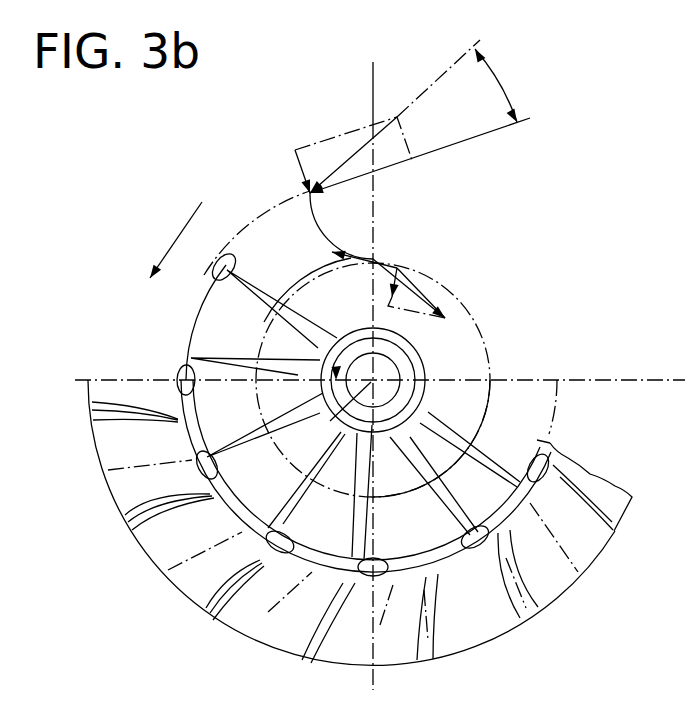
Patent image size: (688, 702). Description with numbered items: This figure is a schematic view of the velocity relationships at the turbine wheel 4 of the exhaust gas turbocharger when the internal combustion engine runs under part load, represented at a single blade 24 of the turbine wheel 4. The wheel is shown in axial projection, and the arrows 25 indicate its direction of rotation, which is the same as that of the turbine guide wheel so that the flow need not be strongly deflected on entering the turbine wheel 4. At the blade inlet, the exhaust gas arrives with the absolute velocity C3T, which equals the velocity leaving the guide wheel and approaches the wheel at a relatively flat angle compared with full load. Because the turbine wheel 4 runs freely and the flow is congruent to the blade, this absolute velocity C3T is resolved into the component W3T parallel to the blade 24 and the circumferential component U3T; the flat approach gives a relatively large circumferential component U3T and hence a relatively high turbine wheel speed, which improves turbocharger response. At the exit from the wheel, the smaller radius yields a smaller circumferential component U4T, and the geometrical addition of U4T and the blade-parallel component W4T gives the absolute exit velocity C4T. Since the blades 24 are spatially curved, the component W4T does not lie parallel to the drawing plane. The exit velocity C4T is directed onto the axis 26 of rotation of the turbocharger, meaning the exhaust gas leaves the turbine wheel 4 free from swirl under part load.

The turbine wheel 4 is at (185, 350).
The blade 24 is at (322, 229).
The arrows 25 is at (176, 232).
The axis of rotation 26 is at (292, 463).
The absolute velocity at turbine wheel entry C3T is at (357, 150).
The velocity component parallel to the blade at entry W3T is at (296, 163).
The circumferential component at entry U3T is at (358, 178).
The absolute velocity at turbine wheel exit C4T is at (413, 282).
The circumferential component at exit U4T is at (373, 258).
The velocity component parallel to the blade at exit W4T is at (429, 294).